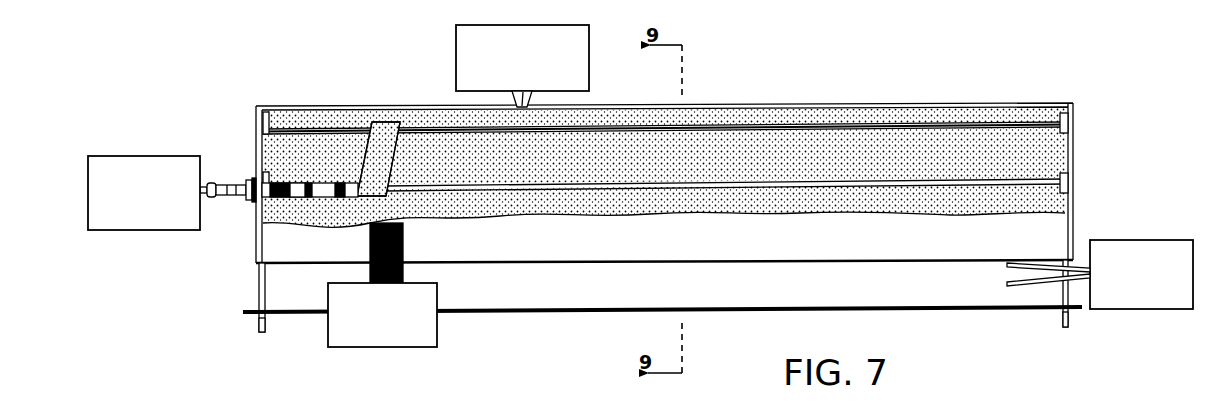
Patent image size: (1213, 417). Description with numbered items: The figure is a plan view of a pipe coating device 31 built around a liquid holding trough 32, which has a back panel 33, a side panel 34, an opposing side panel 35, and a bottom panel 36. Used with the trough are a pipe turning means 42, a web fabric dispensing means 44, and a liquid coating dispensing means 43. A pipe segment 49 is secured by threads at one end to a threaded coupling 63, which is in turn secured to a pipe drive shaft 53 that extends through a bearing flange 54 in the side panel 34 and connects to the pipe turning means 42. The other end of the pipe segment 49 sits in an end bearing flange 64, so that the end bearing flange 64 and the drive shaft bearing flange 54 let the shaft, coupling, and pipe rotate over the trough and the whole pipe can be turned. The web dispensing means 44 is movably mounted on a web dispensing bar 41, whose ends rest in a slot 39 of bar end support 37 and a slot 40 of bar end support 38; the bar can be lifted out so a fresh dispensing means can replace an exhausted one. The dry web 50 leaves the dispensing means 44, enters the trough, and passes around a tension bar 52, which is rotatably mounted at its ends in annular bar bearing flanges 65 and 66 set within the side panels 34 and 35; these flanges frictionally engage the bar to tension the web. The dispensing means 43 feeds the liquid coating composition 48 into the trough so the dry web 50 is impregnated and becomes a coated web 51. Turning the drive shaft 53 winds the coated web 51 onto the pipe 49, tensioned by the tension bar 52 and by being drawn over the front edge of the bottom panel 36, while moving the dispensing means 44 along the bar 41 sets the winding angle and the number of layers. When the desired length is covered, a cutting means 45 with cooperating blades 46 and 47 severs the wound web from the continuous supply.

The pipe coating device 31 is at (866, 80).
The liquid holding trough 32 is at (822, 105).
The back panel 33 is at (940, 110).
The side panel 34 is at (257, 245).
The opposing side panel 35 is at (1074, 222).
The bottom panel 36 is at (762, 258).
The bar end support 37 is at (258, 287).
The bar end support 38 is at (1067, 326).
The slot 39 is at (258, 328).
The slot 40 is at (1062, 316).
The web dispensing bar 41 is at (527, 313).
The pipe turning means 42 is at (135, 156).
The liquid coating dispensing means 43 is at (456, 58).
The web fabric dispensing means 44 is at (395, 347).
The cutting means 45 is at (1142, 240).
The blade 46 is at (1005, 265).
The blade 47 is at (1007, 284).
The liquid coating composition 48 is at (598, 212).
The pipe segment 49 is at (712, 200).
The dry web 50 is at (404, 233).
The coated web 51 is at (366, 150).
The tension bar 52 is at (731, 124).
The pipe drive shaft 53 is at (236, 182).
The bearing flange 54 is at (248, 202).
The threaded coupling 63 is at (292, 186).
The end bearing flange 64 is at (1060, 200).
The annular bar bearing flange 65 is at (266, 114).
The annular bar bearing flange 66 is at (1061, 108).